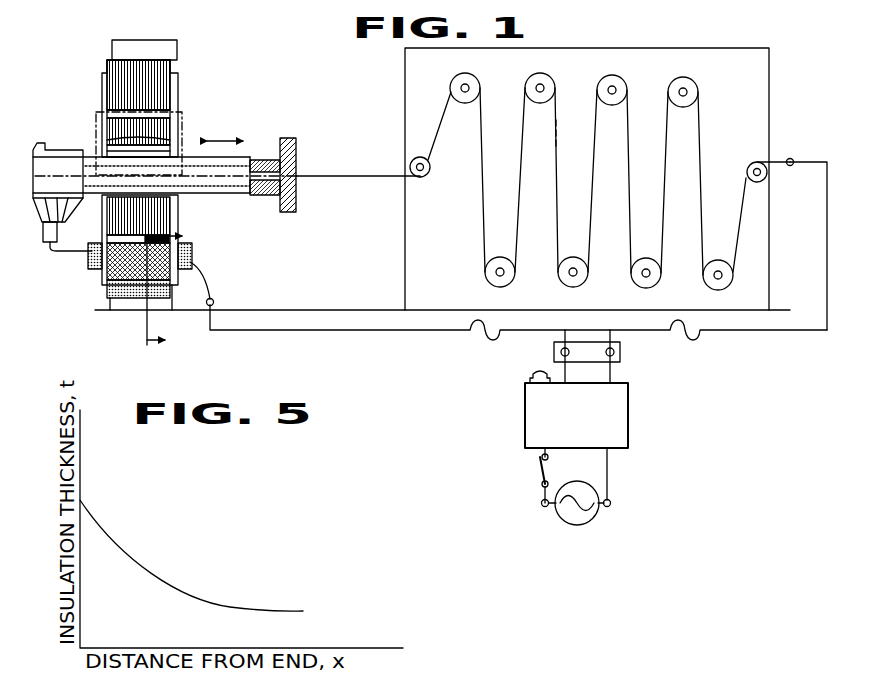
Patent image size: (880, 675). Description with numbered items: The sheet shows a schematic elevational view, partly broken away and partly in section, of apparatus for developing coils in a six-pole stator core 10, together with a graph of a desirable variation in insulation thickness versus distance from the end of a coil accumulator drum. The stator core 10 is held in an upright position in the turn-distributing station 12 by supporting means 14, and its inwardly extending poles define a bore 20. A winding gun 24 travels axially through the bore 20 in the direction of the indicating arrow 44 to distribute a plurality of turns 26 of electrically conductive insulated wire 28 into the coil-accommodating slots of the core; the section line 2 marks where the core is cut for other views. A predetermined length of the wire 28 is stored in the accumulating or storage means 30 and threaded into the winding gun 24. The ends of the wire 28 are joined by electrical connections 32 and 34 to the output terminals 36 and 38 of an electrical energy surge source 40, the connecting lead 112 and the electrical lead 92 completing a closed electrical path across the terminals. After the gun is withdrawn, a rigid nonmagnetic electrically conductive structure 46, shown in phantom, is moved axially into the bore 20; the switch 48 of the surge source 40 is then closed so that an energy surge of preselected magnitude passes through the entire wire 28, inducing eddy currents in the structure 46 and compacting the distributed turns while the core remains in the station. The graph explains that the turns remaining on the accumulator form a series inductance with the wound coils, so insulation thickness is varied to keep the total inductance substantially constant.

The stator core 10 is at (100, 62).
The supporting means 14 is at (162, 46).
The turn-distributing station 12 is at (180, 90).
The rigid nonmagnetic electrically conductive structure 46 is at (184, 126).
The indicating arrow 44 is at (225, 131).
The winding gun 24 is at (74, 150).
The bore 20 is at (172, 230).
The section line 2- 2 is at (173, 288).
The turns 26 is at (88, 262).
The electrically conductive insulated wire 28 is at (48, 252).
The electrical connection 34 is at (214, 301).
The connecting lead 112 is at (300, 330).
The accumulating or storage means 30 is at (405, 78).
The electrical connection 32 is at (793, 158).
The output terminal 38 is at (560, 352).
The output terminal 36 is at (615, 352).
The electrical lead 92 is at (755, 330).
The electrical energy surge source 40 is at (632, 405).
The switch 48 is at (538, 470).